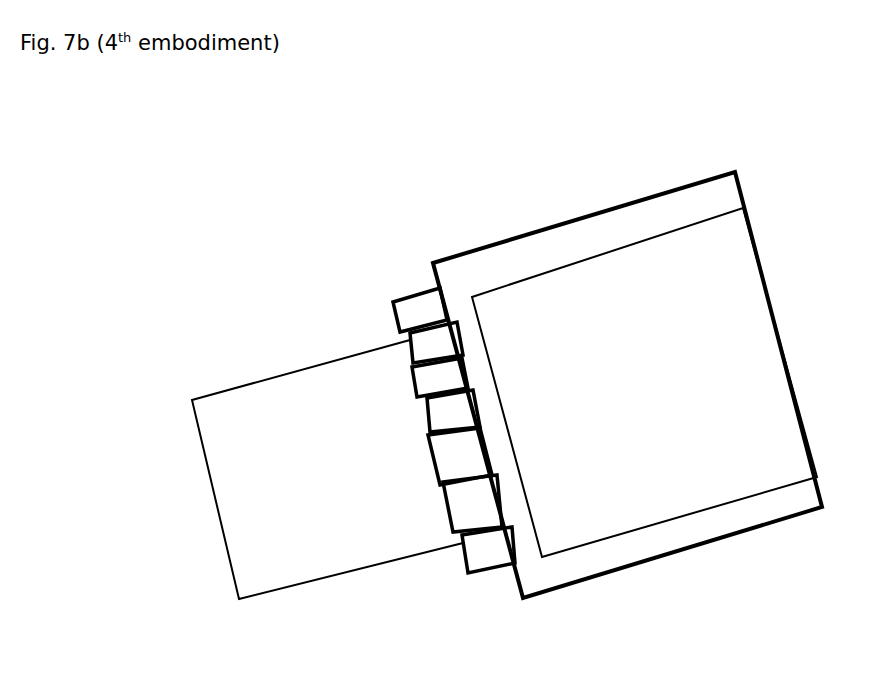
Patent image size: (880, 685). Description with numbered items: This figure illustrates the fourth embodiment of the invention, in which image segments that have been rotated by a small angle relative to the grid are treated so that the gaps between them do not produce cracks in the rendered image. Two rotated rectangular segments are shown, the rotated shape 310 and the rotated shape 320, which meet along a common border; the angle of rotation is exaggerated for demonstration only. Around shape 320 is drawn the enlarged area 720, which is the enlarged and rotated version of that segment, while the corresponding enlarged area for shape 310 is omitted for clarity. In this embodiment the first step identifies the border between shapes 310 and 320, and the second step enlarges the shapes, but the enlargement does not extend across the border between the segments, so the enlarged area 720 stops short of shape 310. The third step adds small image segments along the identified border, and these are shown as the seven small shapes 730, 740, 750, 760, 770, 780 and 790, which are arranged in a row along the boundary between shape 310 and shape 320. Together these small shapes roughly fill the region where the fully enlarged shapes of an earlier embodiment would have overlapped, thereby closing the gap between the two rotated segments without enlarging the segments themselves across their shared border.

The rotated shape 310 is at (273, 583).
The rotated shape 320 is at (645, 524).
The enlarged area 720 is at (735, 172).
The small shape 730 is at (482, 545).
The small shape 740 is at (465, 510).
The small shape 750 is at (493, 440).
The small shape 760 is at (462, 408).
The small shape 770 is at (430, 375).
The small shape 780 is at (447, 343).
The small shape 790 is at (413, 313).